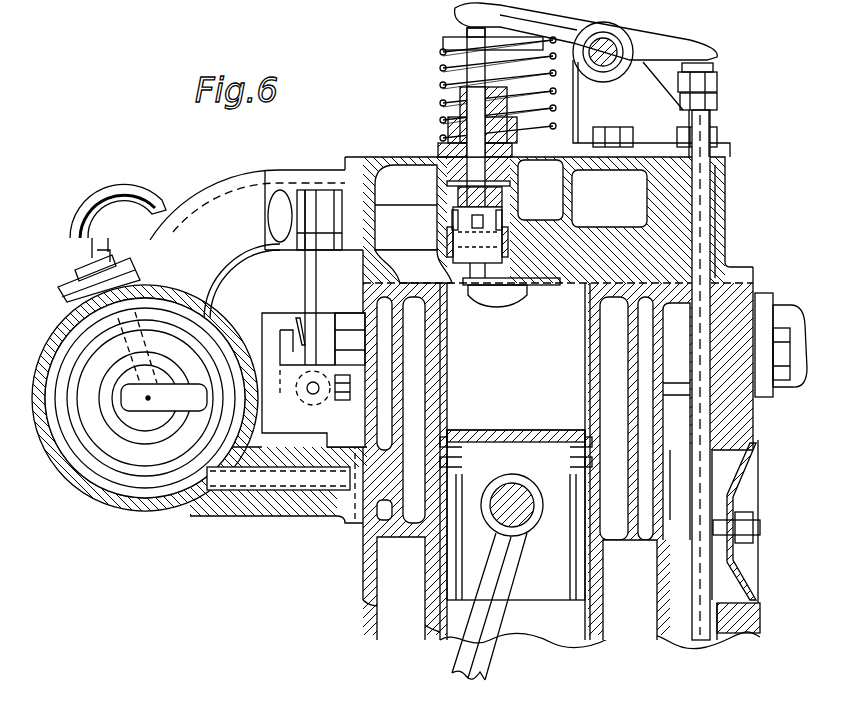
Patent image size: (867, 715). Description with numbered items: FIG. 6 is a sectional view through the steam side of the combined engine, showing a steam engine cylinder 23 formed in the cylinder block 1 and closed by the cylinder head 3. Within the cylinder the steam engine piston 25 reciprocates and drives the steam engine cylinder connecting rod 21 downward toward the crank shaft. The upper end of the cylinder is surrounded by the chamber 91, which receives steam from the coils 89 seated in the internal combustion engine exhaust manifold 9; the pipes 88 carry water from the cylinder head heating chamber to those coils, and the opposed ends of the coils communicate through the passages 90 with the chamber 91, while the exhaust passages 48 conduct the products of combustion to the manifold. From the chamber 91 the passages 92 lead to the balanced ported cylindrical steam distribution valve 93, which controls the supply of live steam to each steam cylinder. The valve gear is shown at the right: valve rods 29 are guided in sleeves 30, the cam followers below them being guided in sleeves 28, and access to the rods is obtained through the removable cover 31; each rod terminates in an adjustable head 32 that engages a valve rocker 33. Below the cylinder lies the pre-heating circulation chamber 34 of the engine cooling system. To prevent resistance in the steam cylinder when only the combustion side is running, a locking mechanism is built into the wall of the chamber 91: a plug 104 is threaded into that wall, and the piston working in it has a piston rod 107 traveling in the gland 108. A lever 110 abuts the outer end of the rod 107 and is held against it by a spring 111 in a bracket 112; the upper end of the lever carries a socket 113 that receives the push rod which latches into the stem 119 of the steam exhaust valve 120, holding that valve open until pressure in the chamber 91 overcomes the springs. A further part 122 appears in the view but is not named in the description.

The cylinder block 1 is at (755, 420).
The cylinder head 3 is at (728, 210).
The internal combustion engine exhaust manifold 9 is at (47, 460).
The steam engine cylinder connecting rod 21 is at (480, 657).
The steam engine cylinder 23 is at (560, 657).
The steam engine piston 25 is at (512, 432).
The sleeves 28 is at (745, 635).
The valve rods 29 is at (710, 470).
The sleeves 30 is at (717, 236).
The removable cover 31 is at (752, 487).
The adjustable heads 32 is at (719, 83).
The valve rockers 33 is at (663, 50).
The pre-heating circulation chamber 34 is at (517, 588).
The exhaust passages 48 is at (233, 187).
The pipes 88 is at (142, 195).
The coils 89 is at (92, 488).
The passages 90 is at (370, 478).
The chambers 91 is at (416, 382).
The passages 92 is at (405, 272).
The balanced ported cylindrical steam distribution valve 93 is at (502, 243).
The plug 104 is at (357, 398).
The piston rod 107 is at (340, 318).
The gland 108 is at (346, 345).
The lever 110 is at (304, 284).
The spring 111 is at (300, 328).
The bracket 112 is at (275, 398).
The socket 113 is at (320, 200).
The stem 119 is at (540, 46).
The exhaust valve 120 is at (522, 302).
The pipe flange 122 is at (283, 192).